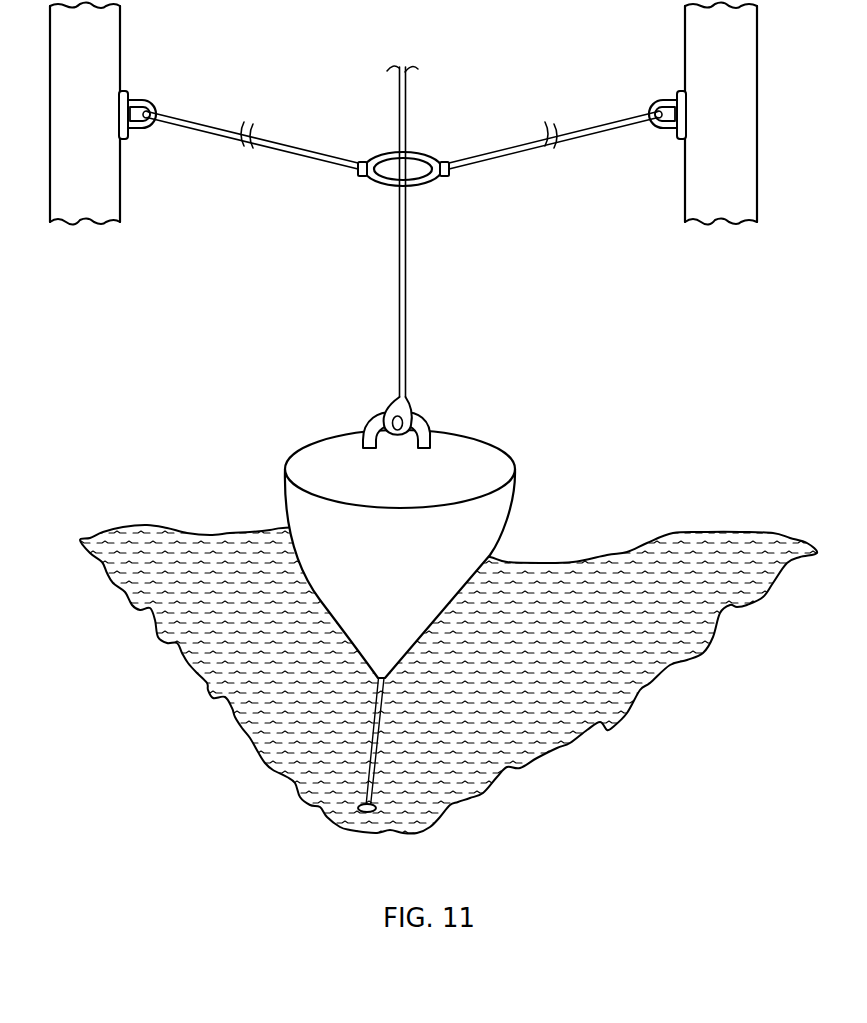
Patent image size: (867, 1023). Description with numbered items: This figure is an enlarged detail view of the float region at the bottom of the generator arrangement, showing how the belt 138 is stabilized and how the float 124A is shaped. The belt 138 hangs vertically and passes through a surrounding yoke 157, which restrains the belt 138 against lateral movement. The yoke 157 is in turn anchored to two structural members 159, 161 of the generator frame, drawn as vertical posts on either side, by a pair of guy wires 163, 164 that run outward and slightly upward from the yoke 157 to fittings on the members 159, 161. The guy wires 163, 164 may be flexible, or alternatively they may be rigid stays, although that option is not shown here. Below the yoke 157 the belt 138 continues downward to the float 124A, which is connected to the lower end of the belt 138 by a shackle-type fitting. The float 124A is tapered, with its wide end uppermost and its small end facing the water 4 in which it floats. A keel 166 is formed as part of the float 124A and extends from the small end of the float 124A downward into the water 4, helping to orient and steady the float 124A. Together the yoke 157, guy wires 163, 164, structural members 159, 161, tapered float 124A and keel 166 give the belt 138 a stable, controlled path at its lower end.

The body of water 4 is at (601, 645).
The float 124A is at (415, 573).
The keel 166 is at (372, 713).
The belt 138 is at (408, 257).
The yoke 157 is at (412, 153).
The guy wire 163 is at (204, 138).
The guy wire 164 is at (598, 138).
The structural member 159 is at (98, 102).
The structural member 161 is at (728, 123).